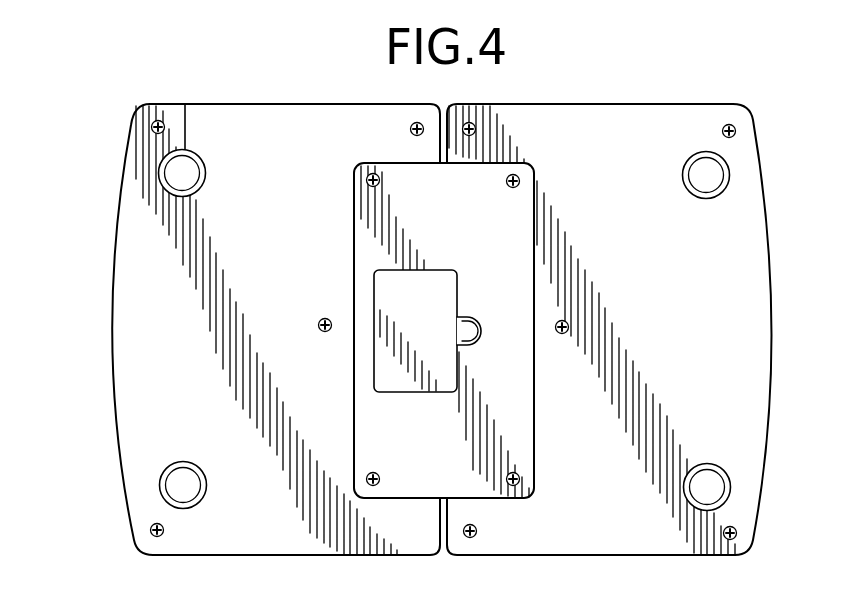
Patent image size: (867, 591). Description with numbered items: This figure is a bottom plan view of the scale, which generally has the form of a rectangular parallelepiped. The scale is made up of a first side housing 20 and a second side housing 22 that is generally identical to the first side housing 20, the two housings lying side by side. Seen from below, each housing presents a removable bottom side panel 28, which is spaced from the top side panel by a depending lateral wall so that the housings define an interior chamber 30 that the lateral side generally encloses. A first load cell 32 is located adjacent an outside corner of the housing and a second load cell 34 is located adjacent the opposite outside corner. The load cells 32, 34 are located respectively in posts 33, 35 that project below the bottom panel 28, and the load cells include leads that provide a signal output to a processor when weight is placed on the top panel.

The first side housing 20 is at (94, 340).
The second side housing 22 is at (776, 201).
The bottom side panel 28 is at (310, 262).
The chamber 30 is at (444, 330).
The first load cell 32 is at (190, 475).
The post 33 is at (207, 487).
The second load cell 34 is at (204, 168).
The post 35 is at (203, 187).